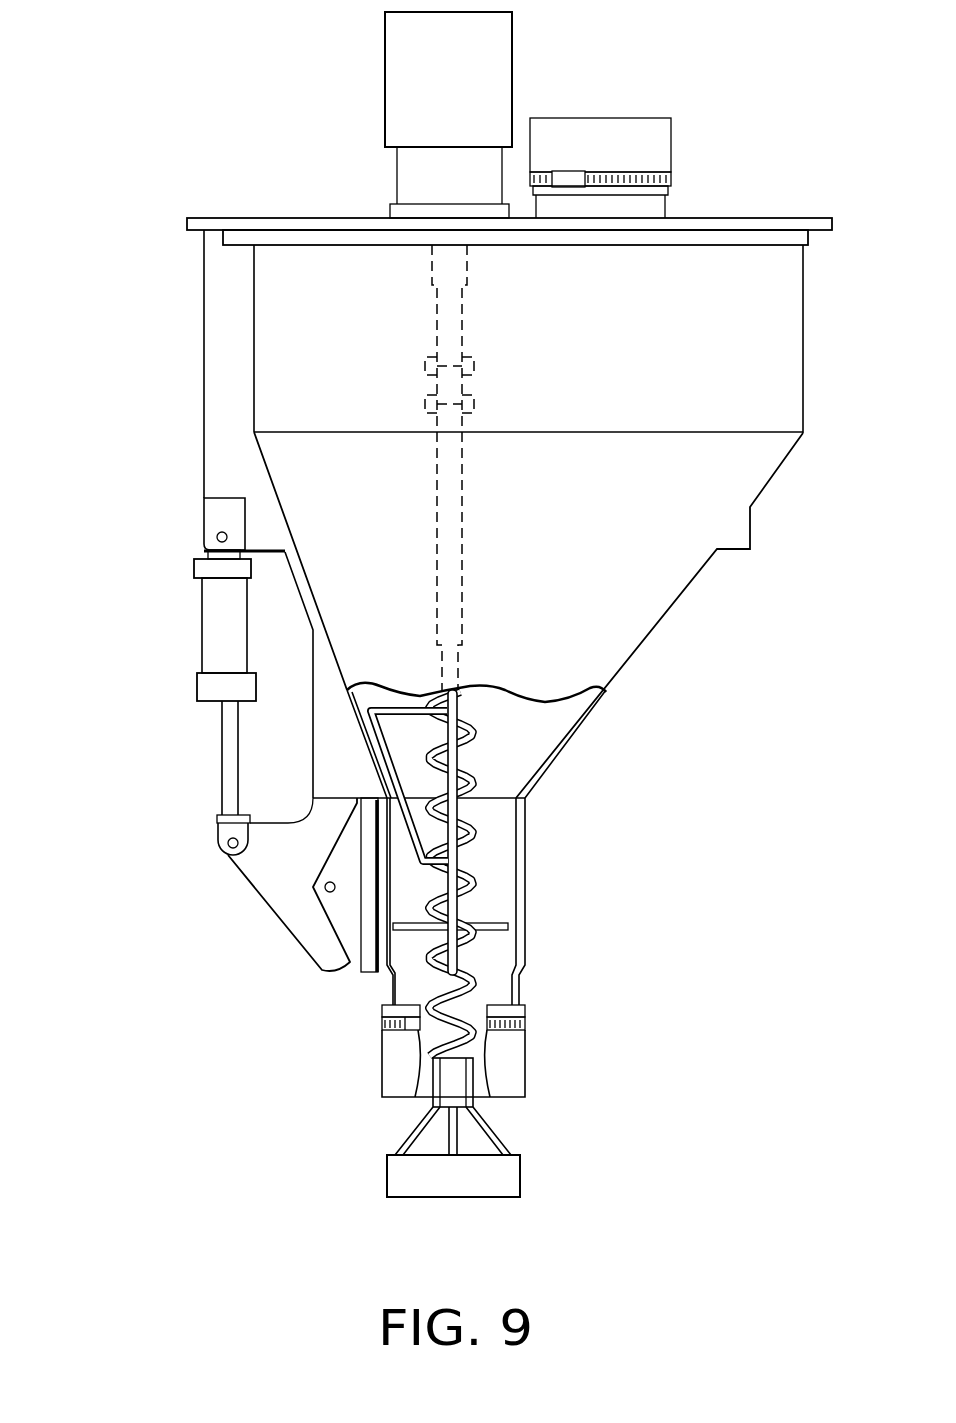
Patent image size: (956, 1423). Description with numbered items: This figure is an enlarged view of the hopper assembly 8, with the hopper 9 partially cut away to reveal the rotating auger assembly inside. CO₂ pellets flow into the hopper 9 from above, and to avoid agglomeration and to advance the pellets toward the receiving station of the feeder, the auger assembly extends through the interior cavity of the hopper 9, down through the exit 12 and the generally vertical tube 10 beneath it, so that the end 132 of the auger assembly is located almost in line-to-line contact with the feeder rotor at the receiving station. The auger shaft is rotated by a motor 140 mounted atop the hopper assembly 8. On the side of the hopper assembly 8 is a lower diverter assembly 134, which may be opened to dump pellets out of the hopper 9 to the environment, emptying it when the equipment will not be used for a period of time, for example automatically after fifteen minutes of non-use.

The hopper assembly 8 is at (186, 389).
The hopper 9 is at (617, 653).
The tube 10 is at (513, 1075).
The exit 12 is at (503, 995).
The end of auger assembly 132 is at (473, 1197).
The lower diverter assembly 134 is at (177, 626).
The motor 140 is at (465, 88).